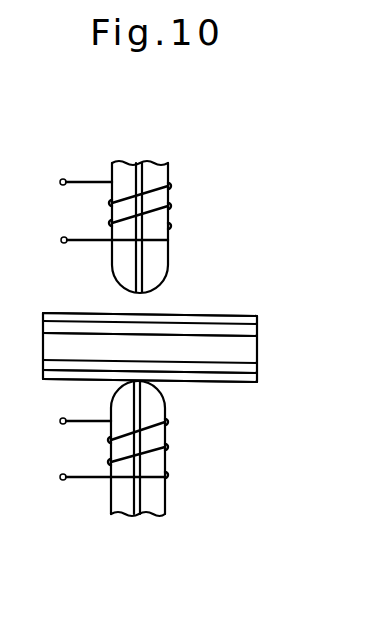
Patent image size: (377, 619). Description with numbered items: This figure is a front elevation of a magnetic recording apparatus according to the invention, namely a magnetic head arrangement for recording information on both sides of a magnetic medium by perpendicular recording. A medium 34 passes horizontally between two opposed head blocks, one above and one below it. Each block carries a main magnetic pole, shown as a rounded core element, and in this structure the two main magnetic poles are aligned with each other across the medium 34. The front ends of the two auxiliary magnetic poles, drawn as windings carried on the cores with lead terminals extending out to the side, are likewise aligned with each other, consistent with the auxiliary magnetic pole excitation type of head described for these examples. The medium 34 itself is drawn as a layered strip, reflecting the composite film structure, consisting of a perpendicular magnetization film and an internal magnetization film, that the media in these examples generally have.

The magnetic tape (recording medium) 34 is at (63, 343).